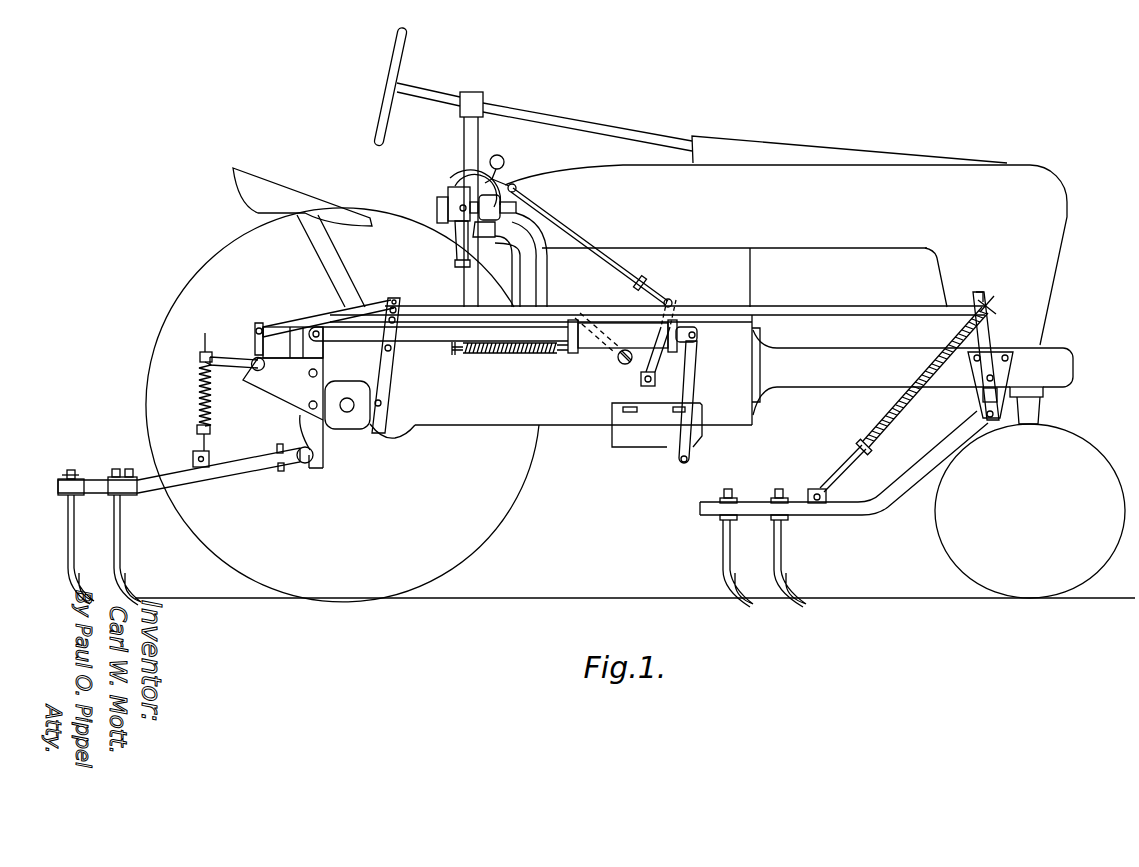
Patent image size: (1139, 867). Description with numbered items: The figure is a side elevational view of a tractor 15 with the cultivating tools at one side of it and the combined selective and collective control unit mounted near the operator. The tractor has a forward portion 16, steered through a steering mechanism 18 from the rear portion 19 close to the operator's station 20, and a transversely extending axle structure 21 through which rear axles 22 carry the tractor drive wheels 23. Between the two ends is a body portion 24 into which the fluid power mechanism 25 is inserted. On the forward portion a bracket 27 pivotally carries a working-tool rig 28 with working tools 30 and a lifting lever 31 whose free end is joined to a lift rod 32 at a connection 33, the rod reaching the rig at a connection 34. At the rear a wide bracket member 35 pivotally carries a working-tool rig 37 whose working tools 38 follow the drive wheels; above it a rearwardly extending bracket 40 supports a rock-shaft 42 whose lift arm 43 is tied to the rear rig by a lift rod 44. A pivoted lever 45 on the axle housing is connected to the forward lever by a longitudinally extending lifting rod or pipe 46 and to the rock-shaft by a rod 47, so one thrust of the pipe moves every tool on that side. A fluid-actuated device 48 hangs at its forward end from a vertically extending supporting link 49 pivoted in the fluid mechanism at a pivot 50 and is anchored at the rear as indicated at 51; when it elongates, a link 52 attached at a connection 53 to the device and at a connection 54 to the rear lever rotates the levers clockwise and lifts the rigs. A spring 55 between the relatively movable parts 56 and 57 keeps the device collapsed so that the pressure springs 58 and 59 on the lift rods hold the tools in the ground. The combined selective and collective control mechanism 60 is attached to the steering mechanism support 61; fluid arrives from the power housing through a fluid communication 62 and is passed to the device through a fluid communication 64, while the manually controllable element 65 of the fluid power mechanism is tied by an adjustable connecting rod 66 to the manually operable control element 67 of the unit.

The tractor 15 is at (623, 176).
The forward portion 16 is at (1043, 322).
The steering mechanism 18 is at (513, 106).
The rear portion 19 is at (1070, 441).
The operator's station 20 is at (258, 181).
The axle structure 21 is at (350, 414).
The rear axle 22 is at (363, 421).
The tractor drive wheel 23 is at (517, 508).
The body portion 24 is at (588, 419).
The fluid power mechanism 25 is at (641, 441).
The bracket 27 is at (980, 396).
The working-tool rig 28 is at (873, 516).
The working tool 30 is at (752, 607).
The lifting lever 31 is at (992, 344).
The lift rod 32 is at (903, 414).
The connection of lift rod to lifting lever 33 is at (996, 313).
The connection of lift rod to working-tool rig 34 is at (816, 489).
The bracket member 35 is at (304, 466).
The working-tool rig 37 is at (230, 468).
The working tool 38 is at (76, 563).
The rearwardly extending bracket 40 is at (283, 393).
The rock-shaft 42 is at (253, 352).
The lift arm 43 is at (253, 374).
The lift rod 44 is at (202, 389).
The pivoted lever 45 is at (393, 358).
The lifting rod or pipe 46 is at (788, 308).
The rod 47 is at (350, 300).
The fluid-actuated device 48 is at (608, 328).
The supporting link 49 is at (698, 386).
The pivot of supporting link 50 is at (696, 460).
The anchorage of fluid-actuated device 51 is at (307, 322).
The link 52 is at (648, 325).
The connection of link to fluid device 53 is at (696, 338).
The connection of link to rear lever 54 is at (400, 311).
The spring 55 is at (525, 356).
The relatively movable part 56 is at (591, 349).
The relatively movable part 57 is at (455, 353).
The pressure spring 58 is at (875, 412).
The pressure spring 59 is at (198, 406).
The combined selective and collective control mechanism 60 is at (450, 196).
The steering mechanism support 61 is at (468, 278).
The fluid communication 62 is at (546, 290).
The fluid communication 64 is at (542, 246).
The manually controllable element 65 is at (676, 315).
The adjustable connecting rod 66 is at (607, 258).
The manually operable control element 67 is at (504, 157).